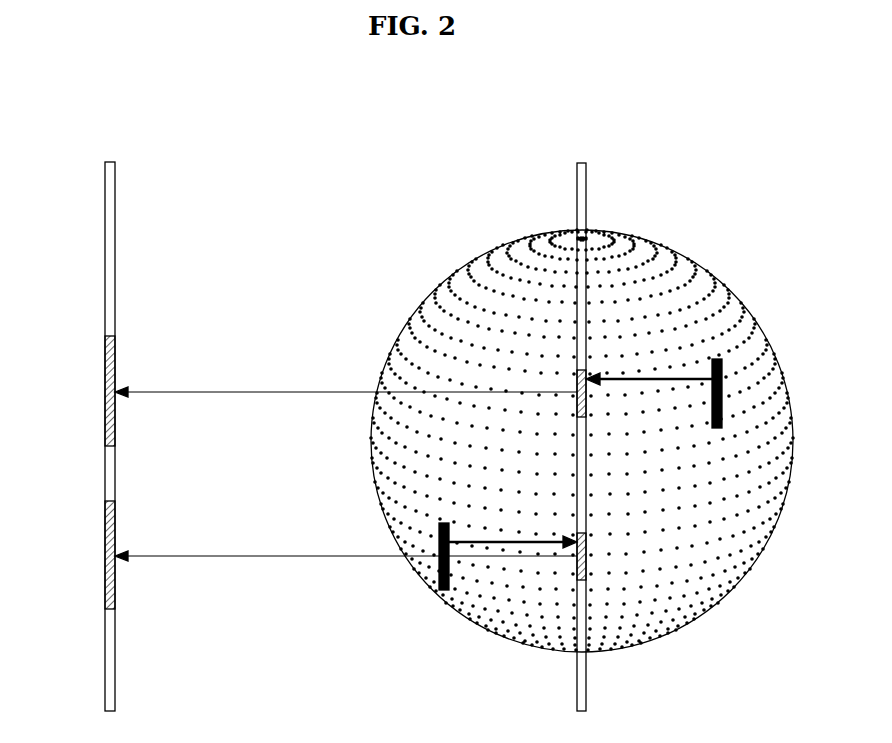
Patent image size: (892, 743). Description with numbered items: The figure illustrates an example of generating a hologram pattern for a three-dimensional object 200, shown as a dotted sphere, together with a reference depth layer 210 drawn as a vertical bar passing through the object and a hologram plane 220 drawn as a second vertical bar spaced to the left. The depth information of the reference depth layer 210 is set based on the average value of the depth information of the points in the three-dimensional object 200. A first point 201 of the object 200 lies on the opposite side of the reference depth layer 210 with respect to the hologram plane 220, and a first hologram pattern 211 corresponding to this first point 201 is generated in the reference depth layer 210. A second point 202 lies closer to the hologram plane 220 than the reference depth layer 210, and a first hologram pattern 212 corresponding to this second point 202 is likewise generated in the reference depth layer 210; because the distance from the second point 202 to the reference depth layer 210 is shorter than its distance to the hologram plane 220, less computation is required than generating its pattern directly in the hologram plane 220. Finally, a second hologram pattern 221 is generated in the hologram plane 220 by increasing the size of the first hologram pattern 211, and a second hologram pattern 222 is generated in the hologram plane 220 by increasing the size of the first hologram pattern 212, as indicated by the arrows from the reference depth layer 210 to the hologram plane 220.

The 3D object 200 is at (666, 238).
The first point 201 is at (722, 370).
The second point 202 is at (439, 530).
The reference depth layer 210 is at (581, 163).
The first hologram pattern 211 is at (577, 372).
The first hologram pattern 212 is at (586, 546).
The hologram plane 220 is at (112, 162).
The second hologram pattern 221 is at (105, 392).
The second hologram pattern 222 is at (105, 548).